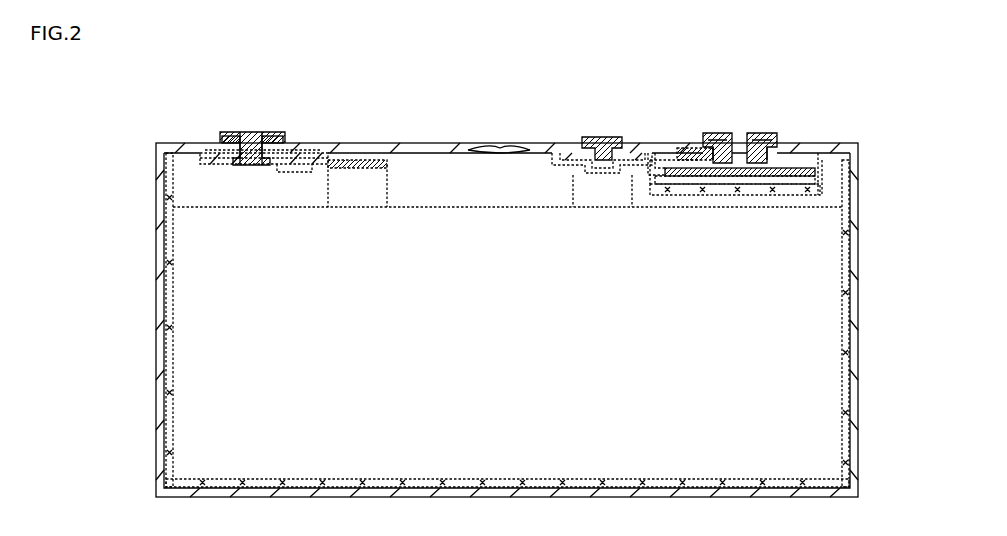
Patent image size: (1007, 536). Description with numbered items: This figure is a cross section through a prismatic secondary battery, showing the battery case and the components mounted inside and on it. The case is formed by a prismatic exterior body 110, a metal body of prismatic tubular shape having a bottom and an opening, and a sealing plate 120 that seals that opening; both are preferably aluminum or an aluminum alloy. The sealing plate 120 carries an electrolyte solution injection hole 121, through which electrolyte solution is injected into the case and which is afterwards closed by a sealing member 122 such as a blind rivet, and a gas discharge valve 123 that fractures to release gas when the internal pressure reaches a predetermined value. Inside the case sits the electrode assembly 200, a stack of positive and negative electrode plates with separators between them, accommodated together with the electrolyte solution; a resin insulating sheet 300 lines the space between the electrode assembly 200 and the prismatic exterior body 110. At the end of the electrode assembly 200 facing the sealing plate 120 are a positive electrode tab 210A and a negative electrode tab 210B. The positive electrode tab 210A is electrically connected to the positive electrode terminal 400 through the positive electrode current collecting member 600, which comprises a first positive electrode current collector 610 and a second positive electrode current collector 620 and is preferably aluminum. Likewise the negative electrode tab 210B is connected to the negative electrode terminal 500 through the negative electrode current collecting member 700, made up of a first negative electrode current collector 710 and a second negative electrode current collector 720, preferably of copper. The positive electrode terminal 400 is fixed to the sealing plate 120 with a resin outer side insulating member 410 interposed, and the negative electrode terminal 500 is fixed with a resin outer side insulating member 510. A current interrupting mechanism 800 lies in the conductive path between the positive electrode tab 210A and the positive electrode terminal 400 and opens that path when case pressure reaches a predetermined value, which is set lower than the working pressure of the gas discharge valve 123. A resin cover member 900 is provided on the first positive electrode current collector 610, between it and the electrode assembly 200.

The prismatic exterior body 110 is at (850, 356).
The sealing plate 120 is at (442, 148).
The electrolyte solution injection hole 121 is at (600, 140).
The sealing member 122 is at (607, 137).
The gas discharge valve 123 is at (495, 150).
The electrode assembly 200 is at (808, 412).
The positive electrode tab 210A is at (585, 189).
The negative electrode tab 210B is at (377, 190).
The insulating sheet 300 is at (170, 356).
The positive electrode terminal 400 is at (713, 133).
The outer side insulating member 410 is at (764, 133).
The negative electrode terminal 500 is at (258, 130).
The outer side insulating member 510 is at (233, 136).
The positive electrode current collecting member 600 is at (660, 192).
The first positive electrode current collector 610 is at (775, 190).
The second positive electrode current collector 620 is at (645, 142).
The negative electrode current collecting member 700 is at (298, 178).
The first negative electrode current collector 710 is at (228, 166).
The second negative electrode current collector 720 is at (322, 153).
The current interrupting mechanism 800 is at (818, 172).
The cover member 900 is at (763, 195).